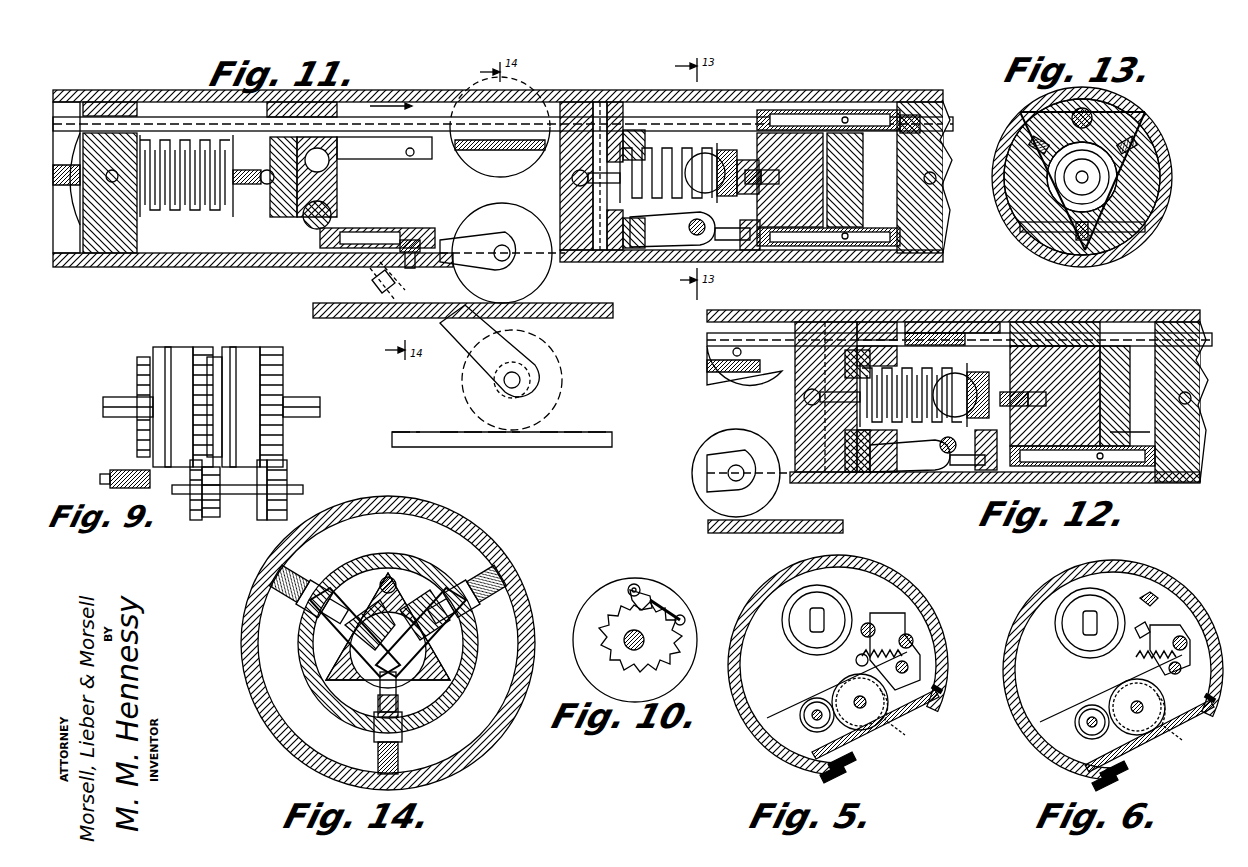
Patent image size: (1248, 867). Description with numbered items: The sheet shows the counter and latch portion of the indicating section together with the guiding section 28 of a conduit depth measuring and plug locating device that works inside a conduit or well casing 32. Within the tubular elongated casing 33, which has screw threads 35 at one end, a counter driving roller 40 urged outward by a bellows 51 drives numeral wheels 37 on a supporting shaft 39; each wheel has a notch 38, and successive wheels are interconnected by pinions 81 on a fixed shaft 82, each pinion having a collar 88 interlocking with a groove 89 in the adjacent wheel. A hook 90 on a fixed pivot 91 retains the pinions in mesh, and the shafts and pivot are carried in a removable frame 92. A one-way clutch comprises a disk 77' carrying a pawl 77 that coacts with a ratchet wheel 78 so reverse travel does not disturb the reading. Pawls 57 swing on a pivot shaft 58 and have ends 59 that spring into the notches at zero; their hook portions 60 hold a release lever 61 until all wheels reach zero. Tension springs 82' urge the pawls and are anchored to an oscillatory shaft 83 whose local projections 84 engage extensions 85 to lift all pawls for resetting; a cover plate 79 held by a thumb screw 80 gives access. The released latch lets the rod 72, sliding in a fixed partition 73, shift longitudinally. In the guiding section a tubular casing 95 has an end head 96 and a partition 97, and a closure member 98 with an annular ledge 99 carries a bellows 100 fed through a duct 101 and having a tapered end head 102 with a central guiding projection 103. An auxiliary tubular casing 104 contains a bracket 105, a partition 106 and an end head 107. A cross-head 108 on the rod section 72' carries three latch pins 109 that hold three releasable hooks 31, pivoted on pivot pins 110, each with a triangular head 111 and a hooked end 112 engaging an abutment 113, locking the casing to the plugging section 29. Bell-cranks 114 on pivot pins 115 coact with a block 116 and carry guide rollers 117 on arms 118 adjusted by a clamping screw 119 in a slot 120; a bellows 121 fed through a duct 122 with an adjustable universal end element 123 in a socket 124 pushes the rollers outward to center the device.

In FIG. 11, the guiding section 28 is at (237, 267).
In FIG. 11, the plugging section 29 is at (890, 258).
In FIG. 12, the plugging section 29 is at (1168, 320).
In FIG. 11, the releasable hooks 31 is at (660, 248).
In FIG. 13, the releasable hooks 31 is at (1030, 135).
In FIG. 12, the releasable hooks 31 is at (922, 472).
In FIG. 11, the conduit or well casing 32 is at (598, 320).
In FIG. 12, the conduit or well casing 32 is at (845, 530).
In FIG. 14, the conduit or well casing 32 is at (485, 520).
In FIG. 11, the tubular elongated casing 33 is at (70, 90).
In FIG. 5, the tubular elongated casing 33 is at (780, 585).
In FIG. 6, the tubular elongated casing 33 is at (1078, 573).
In FIG. 11, the screw threads 35 is at (80, 262).
In FIG. 9, the numeral wheels 37 is at (168, 347).
In FIG. 5, the numeral wheels 37 is at (835, 690).
In FIG. 6, the numeral wheels 37 is at (1100, 695).
In FIG. 9, the notch 38 is at (250, 405).
In FIG. 5, the notch 38 is at (870, 710).
In FIG. 6, the notch 38 is at (1145, 722).
In FIG. 9, the supporting shaft 39 is at (105, 406).
In FIG. 10, the supporting shaft 39 is at (628, 646).
In FIG. 5, the supporting shaft 39 is at (828, 740).
In FIG. 6, the supporting shaft 39 is at (1100, 740).
In FIG. 11, the counter driving roller 40 is at (66, 165).
In FIG. 5, the bellows 51 is at (808, 628).
In FIG. 6, the bellows 51 is at (1080, 600).
In FIG. 5, the pawls 57 is at (910, 615).
In FIG. 6, the pawls 57 is at (1165, 625).
In FIG. 5, the pivot shaft 58 is at (909, 667).
In FIG. 6, the pivot shaft 58 is at (1168, 668).
In FIG. 5, the pawl ends 59 is at (920, 700).
In FIG. 6, the pawl ends 59 is at (1185, 705).
In FIG. 5, the hook portions 60 is at (868, 622).
In FIG. 6, the hook portions 60 is at (1141, 624).
In FIG. 5, the release lever 61 is at (818, 635).
In FIG. 6, the release lever 61 is at (1152, 596).
In FIG. 13, the rod 72 is at (1109, 104).
In FIG. 12, the rod 72 is at (938, 341).
In FIG. 14, the rod 72 is at (431, 563).
In FIG. 11, the rod section 72' is at (503, 99).
In FIG. 11, the fixed partition 73 is at (90, 240).
In FIG. 10, the pawl 77 is at (650, 587).
In FIG. 10, the disk 77' is at (633, 637).
In FIG. 10, the ratchet wheel 78 is at (682, 615).
In FIG. 5, the cover plate 79 is at (866, 748).
In FIG. 6, the cover plate 79 is at (1140, 752).
In FIG. 5, the thumb screw 80 is at (840, 775).
In FIG. 6, the thumb screw 80 is at (1112, 778).
In FIG. 9, the pinions 81 is at (280, 478).
In FIG. 5, the pinions 81 is at (825, 728).
In FIG. 6, the pinions 81 is at (1078, 735).
In FIG. 9, the fixed shaft 82 is at (230, 516).
In FIG. 5, the fixed shaft 82 is at (768, 725).
In FIG. 6, the fixed shaft 82 is at (1038, 716).
In FIG. 5, the tension springs 82' is at (860, 692).
In FIG. 6, the tension springs 82' is at (1137, 683).
In FIG. 5, the oscillatory shaft 83 is at (905, 648).
In FIG. 6, the oscillatory shaft 83 is at (1156, 663).
In FIG. 5, the local projections 84 is at (913, 638).
In FIG. 6, the local projections 84 is at (1186, 638).
In FIG. 5, the extensions 85 is at (905, 622).
In FIG. 6, the extensions 85 is at (1180, 612).
In FIG. 9, the collar 88 is at (260, 520).
In FIG. 9, the groove 89 is at (200, 347).
In FIG. 9, the hook 90 is at (137, 443).
In FIG. 9, the fixed pivot 91 is at (100, 478).
In FIG. 5, the removable frame 92 is at (790, 735).
In FIG. 6, the removable frame 92 is at (1060, 725).
In FIG. 11, the tubular casing 95 is at (420, 100).
In FIG. 12, the tubular casing 95 is at (760, 312).
In FIG. 14, the tubular casing 95 is at (380, 577).
In FIG. 11, the end head 96 is at (112, 182).
In FIG. 11, the partition 97 is at (315, 110).
In FIG. 14, the partition 97 is at (340, 690).
In FIG. 11, the closure member 98 is at (600, 100).
In FIG. 12, the closure member 98 is at (865, 322).
In FIG. 14, the closure member 98 is at (420, 665).
In FIG. 11, the annular ledge 99 is at (640, 100).
In FIG. 12, the annular ledge 99 is at (900, 322).
In FIG. 11, the bellows 100 is at (640, 178).
In FIG. 13, the bellows 100 is at (1130, 205).
In FIG. 12, the bellows 100 is at (870, 400).
In FIG. 11, the duct 101 is at (572, 178).
In FIG. 12, the duct 101 is at (804, 396).
In FIG. 11, the tapered end head 102 is at (725, 150).
In FIG. 12, the tapered end head 102 is at (968, 398).
In FIG. 11, the central guiding projection 103 is at (790, 178).
In FIG. 13, the central guiding projection 103 is at (1100, 182).
In FIG. 12, the central guiding projection 103 is at (1015, 392).
In FIG. 11, the tubular casing 104 is at (820, 102).
In FIG. 13, the tubular casing 104 is at (1160, 160).
In FIG. 12, the tubular casing 104 is at (1012, 322).
In FIG. 11, the bracket 105 is at (730, 248).
In FIG. 13, the bracket 105 is at (1030, 233).
In FIG. 12, the bracket 105 is at (962, 472).
In FIG. 11, the partition 106 is at (800, 250).
In FIG. 12, the partition 106 is at (1060, 340).
In FIG. 11, the end head 107 is at (946, 234).
In FIG. 13, the end head 107 is at (1000, 225).
In FIG. 12, the end head 107 is at (1182, 482).
In FIG. 11, the cross-head 108 is at (850, 212).
In FIG. 12, the cross-head 108 is at (1130, 432).
In FIG. 11, the latch pins 109 is at (862, 155).
In FIG. 12, the latch pins 109 is at (1078, 470).
In FIG. 11, the pivot pins 110 is at (695, 240).
In FIG. 13, the pivot pins 110 is at (1135, 140).
In FIG. 12, the pivot pins 110 is at (947, 455).
In FIG. 11, the triangular head 111 is at (750, 250).
In FIG. 11, the hooked end 112 is at (630, 245).
In FIG. 12, the hooked end 112 is at (880, 475).
In FIG. 11, the abutment 113 is at (625, 250).
In FIG. 12, the abutment 113 is at (850, 475).
In FIG. 11, the bell-cranks 114 is at (350, 160).
In FIG. 14, the bell-cranks 114 is at (370, 648).
In FIG. 11, the pivot pins 115 is at (300, 250).
In FIG. 14, the pivot pins 115 is at (315, 660).
In FIG. 11, the block 116 is at (278, 205).
In FIG. 11, the guide rollers 117 is at (485, 218).
In FIG. 12, the guide rollers 117 is at (712, 385).
In FIG. 14, the guide rollers 117 is at (275, 578).
In FIG. 11, the arms 118 is at (490, 155).
In FIG. 12, the arms 118 is at (712, 362).
In FIG. 14, the arms 118 is at (400, 710).
In FIG. 11, the clamping screw 119 is at (410, 156).
In FIG. 14, the clamping screw 119 is at (322, 585).
In FIG. 11, the slot 120 is at (352, 268).
In FIG. 11, the bellows 121 is at (148, 222).
In FIG. 11, the duct 122 is at (135, 258).
In FIG. 11, the adjustable universal end element 123 is at (245, 184).
In FIG. 11, the socket 124 is at (262, 170).